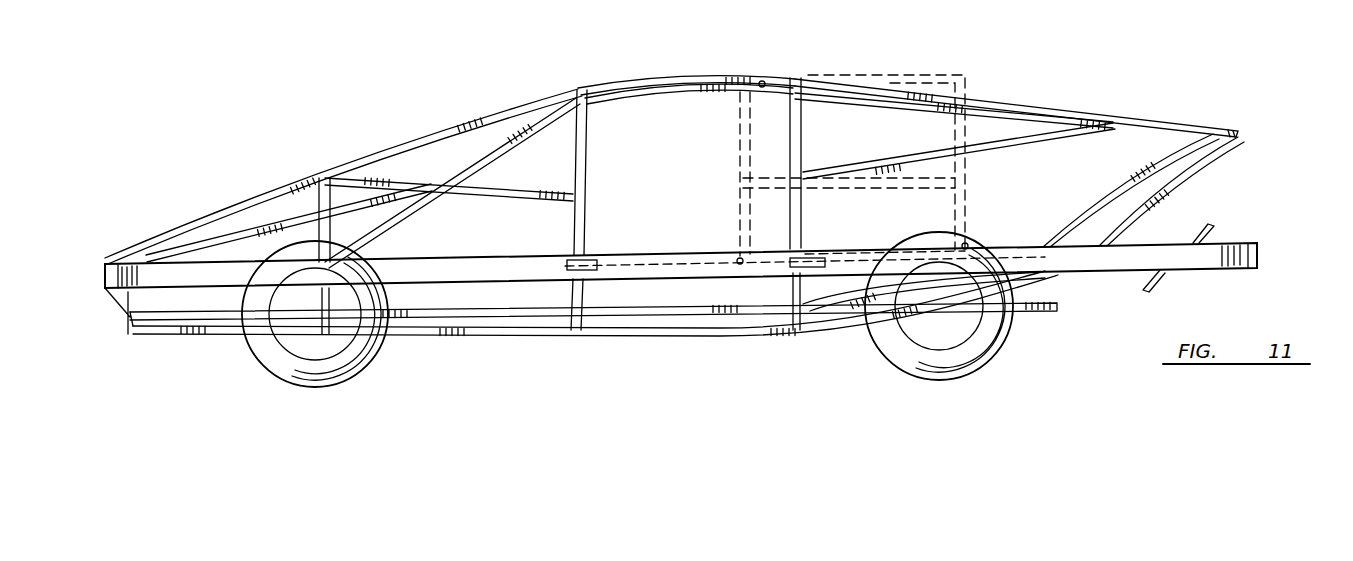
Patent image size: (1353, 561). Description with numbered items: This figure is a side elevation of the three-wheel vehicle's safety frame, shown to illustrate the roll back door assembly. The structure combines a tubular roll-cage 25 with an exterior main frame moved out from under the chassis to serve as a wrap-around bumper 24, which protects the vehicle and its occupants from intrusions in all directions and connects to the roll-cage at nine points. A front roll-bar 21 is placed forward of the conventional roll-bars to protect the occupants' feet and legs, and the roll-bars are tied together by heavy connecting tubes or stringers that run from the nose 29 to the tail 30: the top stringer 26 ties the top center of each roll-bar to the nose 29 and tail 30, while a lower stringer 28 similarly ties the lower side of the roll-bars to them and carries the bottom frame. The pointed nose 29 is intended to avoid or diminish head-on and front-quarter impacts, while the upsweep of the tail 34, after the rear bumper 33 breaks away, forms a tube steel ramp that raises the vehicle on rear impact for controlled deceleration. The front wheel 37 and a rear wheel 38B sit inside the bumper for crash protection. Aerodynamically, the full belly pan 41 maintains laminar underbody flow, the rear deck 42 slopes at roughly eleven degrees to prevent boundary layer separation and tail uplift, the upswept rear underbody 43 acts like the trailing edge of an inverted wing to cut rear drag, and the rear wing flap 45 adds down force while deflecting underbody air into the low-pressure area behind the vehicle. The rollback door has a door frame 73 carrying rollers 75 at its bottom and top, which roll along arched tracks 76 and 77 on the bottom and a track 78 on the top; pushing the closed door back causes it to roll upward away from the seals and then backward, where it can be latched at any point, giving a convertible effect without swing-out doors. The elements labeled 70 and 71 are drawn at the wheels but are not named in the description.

The front roll-bar 21 is at (316, 196).
The wrap-around bumper 24 is at (190, 273).
The roll-cage 25 is at (716, 68).
The top stringer 26 is at (640, 79).
The stringer 28 is at (675, 315).
The nose 29 is at (106, 266).
The tail 30 is at (1240, 133).
The rear bumper 33 is at (1258, 254).
The upsweep of the tail 34 is at (1205, 170).
The front wheel 37 is at (343, 347).
The rear wheel 38B is at (970, 330).
The full belly pan 41 is at (756, 341).
The rear deck 42 is at (1107, 113).
The rear underbody 43 is at (1148, 218).
The rear wing flap 45 is at (1210, 226).
The front wheel 70 is at (341, 372).
The rear wheel 71 is at (967, 352).
The door frame 73 is at (733, 162).
The rollers 75 is at (763, 82).
The arched track 76 is at (598, 271).
The arched track 77 is at (845, 268).
The top track 78 is at (612, 100).